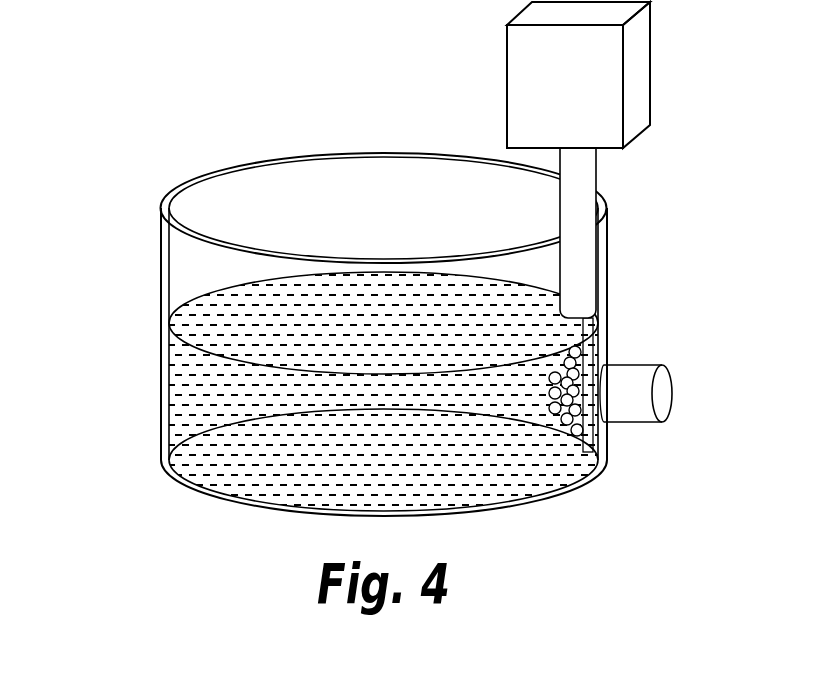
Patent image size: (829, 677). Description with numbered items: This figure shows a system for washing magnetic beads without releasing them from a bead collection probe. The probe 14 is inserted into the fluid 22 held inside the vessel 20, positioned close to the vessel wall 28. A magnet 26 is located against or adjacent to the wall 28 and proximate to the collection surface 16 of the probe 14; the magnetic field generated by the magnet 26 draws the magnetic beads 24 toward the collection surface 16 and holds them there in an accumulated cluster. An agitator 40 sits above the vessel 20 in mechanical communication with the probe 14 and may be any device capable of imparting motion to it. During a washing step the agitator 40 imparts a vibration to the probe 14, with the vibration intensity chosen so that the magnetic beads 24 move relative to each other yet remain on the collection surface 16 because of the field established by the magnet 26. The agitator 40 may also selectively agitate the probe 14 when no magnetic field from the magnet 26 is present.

The probe 14 is at (583, 211).
The collection surface 16 is at (593, 435).
The vessel 20 is at (215, 177).
The fluid 22 is at (205, 378).
The magnetic beads 24 is at (555, 434).
The magnet 26 is at (640, 377).
The vessel wall 28 is at (622, 267).
The agitator 40 is at (638, 97).